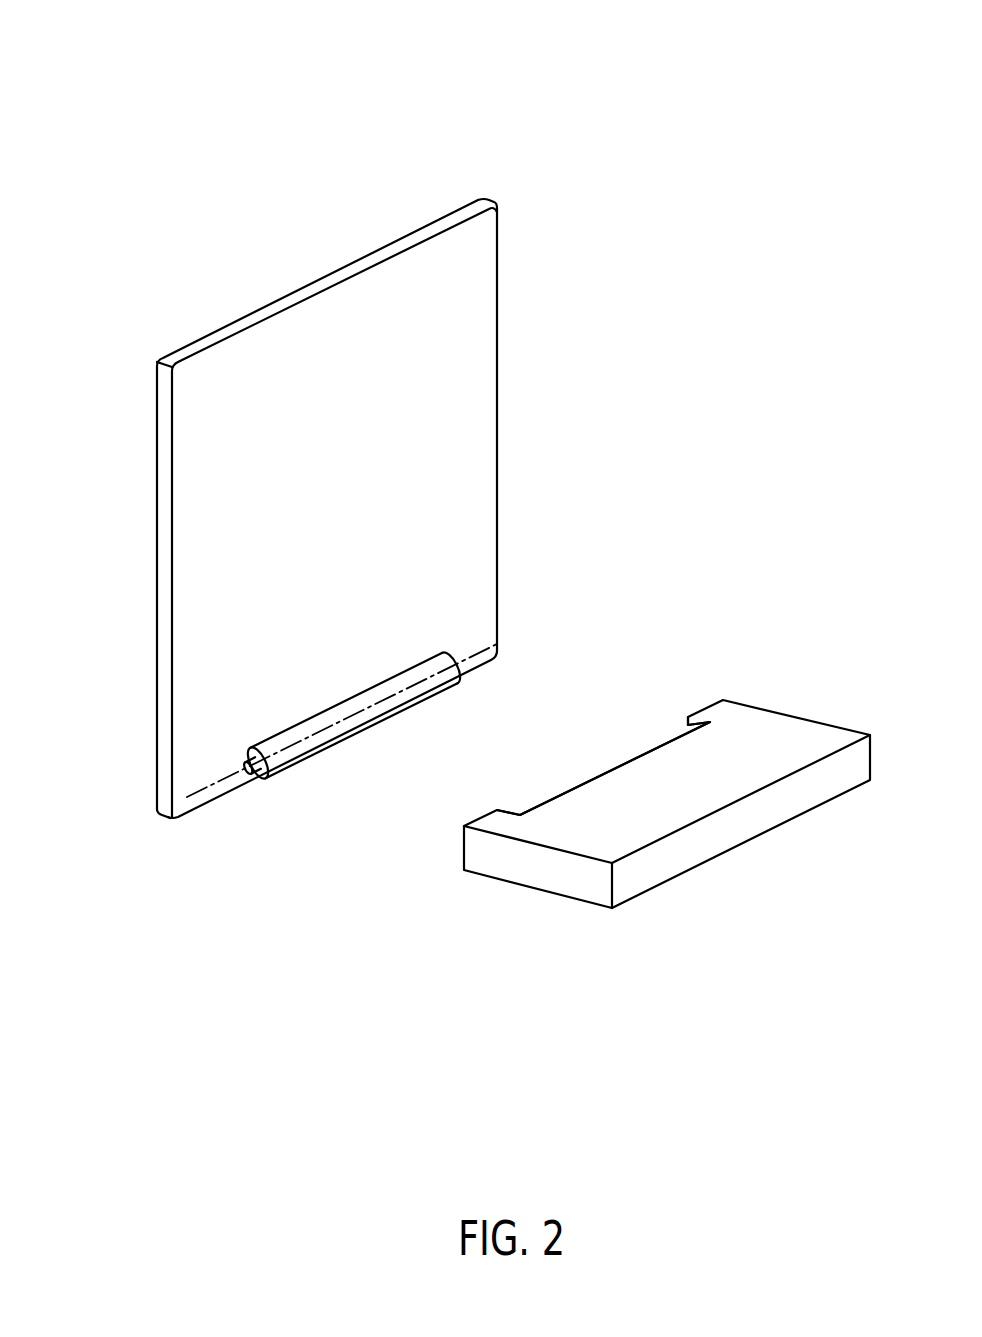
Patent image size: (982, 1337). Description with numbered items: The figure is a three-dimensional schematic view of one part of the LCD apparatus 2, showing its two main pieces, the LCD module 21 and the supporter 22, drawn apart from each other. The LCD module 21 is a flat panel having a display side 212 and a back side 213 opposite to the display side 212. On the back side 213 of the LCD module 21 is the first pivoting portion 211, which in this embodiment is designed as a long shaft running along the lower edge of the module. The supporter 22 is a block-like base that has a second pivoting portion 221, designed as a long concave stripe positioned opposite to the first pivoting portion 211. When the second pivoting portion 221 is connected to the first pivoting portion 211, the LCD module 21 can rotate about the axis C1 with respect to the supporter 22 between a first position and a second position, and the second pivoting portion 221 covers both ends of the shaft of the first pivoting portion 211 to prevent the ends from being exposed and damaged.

The LCD apparatus 2 is at (207, 46).
The LCD module 21 is at (353, 467).
The first pivoting portion 211 is at (437, 683).
The display side 212 is at (157, 402).
The back side 213 is at (483, 487).
The axis C1 is at (497, 644).
The supporter 22 is at (626, 814).
The second pivoting portion 221 is at (688, 717).